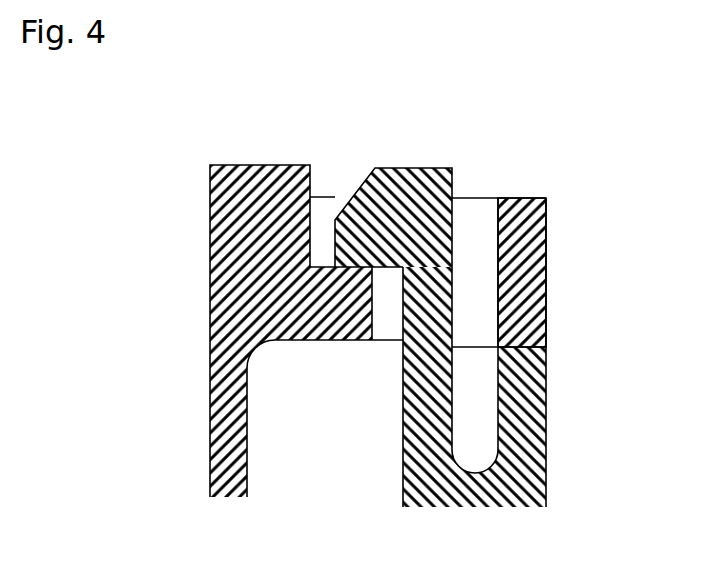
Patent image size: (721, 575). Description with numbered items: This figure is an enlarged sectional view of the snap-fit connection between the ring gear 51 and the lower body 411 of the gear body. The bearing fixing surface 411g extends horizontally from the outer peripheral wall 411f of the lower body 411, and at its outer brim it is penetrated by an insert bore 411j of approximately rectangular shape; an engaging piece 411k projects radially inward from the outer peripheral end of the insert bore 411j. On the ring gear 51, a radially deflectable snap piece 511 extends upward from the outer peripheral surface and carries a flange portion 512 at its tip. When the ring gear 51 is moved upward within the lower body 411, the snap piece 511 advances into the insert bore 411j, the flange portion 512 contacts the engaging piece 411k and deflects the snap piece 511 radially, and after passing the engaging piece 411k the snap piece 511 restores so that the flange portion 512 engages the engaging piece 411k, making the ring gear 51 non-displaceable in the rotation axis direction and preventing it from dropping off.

The lower body 411 is at (216, 195).
The outer peripheral wall 411f is at (220, 352).
The bearing fixing surface 411g is at (530, 198).
The insert bore 411j is at (498, 249).
The engaging piece 411k is at (350, 341).
The ring gear 51 is at (546, 410).
The snap piece 511 is at (450, 310).
The flange portion 512 is at (338, 237).